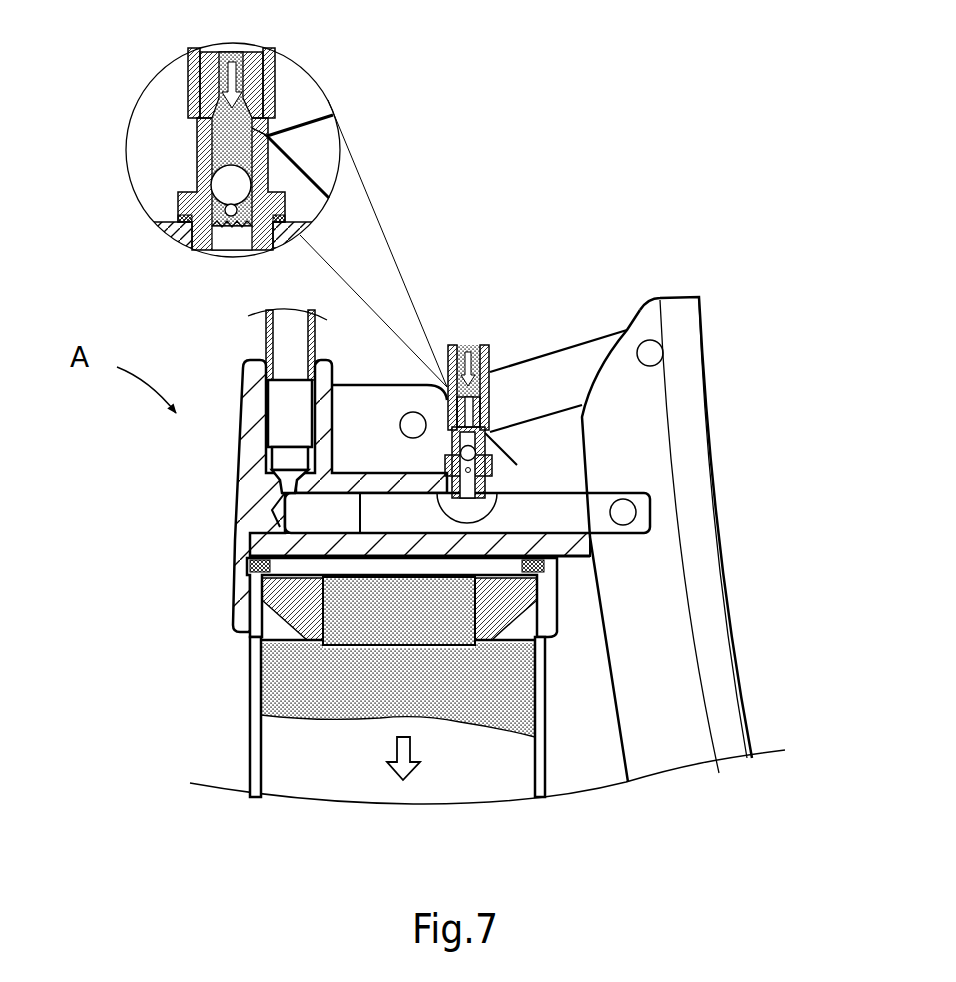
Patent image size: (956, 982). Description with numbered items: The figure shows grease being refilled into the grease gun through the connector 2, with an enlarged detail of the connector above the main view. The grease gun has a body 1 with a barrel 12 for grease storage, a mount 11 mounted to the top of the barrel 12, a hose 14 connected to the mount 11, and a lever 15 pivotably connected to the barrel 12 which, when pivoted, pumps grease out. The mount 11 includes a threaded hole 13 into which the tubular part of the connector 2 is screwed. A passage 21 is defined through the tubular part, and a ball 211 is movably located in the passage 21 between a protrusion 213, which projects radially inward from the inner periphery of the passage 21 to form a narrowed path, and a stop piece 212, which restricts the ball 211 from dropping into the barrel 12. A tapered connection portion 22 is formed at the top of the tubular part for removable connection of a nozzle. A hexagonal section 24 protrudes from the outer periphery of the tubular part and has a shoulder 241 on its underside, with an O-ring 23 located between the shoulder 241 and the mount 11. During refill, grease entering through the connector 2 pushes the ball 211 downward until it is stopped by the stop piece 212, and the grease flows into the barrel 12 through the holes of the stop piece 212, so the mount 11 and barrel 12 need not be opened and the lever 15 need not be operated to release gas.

The body 1 is at (90, 674).
The mount 11 is at (254, 510).
The barrel 12 is at (250, 683).
The threaded hole 13 is at (193, 242).
The hose 14 is at (267, 328).
The lever 15 is at (693, 497).
The connector 2 is at (500, 447).
The passage 21 is at (200, 143).
The connection portion 22 is at (200, 72).
The O-ring 23 is at (185, 218).
The hexagonal section 24 is at (256, 184).
The ball 211 is at (247, 177).
The stop piece 212 is at (282, 204).
The protrusion 213 is at (268, 132).
The shoulder 241 is at (290, 234).